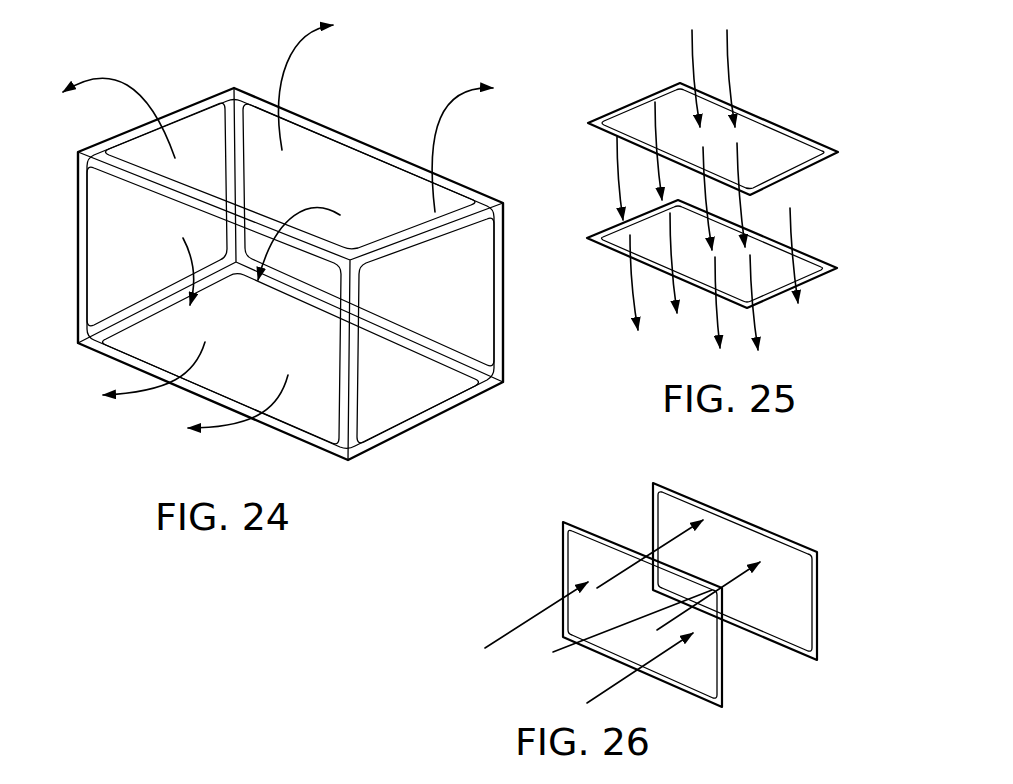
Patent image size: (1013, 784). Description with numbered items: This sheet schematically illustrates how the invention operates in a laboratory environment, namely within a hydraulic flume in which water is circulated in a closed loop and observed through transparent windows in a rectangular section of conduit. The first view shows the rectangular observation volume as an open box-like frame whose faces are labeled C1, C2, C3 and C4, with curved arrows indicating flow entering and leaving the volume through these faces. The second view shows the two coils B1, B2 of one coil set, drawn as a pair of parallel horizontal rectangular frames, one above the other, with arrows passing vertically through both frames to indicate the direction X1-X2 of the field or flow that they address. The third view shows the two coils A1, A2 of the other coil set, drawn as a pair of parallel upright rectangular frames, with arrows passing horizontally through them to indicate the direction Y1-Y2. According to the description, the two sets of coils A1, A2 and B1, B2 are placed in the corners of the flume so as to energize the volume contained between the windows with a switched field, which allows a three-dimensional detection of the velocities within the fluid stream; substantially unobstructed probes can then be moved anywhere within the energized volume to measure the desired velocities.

In FIG. 24, the first side surface of frame C1 is at (354, 142).
In FIG. 24, the second side surface of frame C2 is at (402, 427).
In FIG. 24, the third side surface of frame C3 is at (80, 222).
In FIG. 24, the fourth side surface of frame C4 is at (503, 268).
In FIG. 25, the coil B1 is at (732, 139).
In FIG. 25, the coil B2 is at (731, 254).
In FIG. 25, the vertical flow direction X1-X2 is at (730, 190).
In FIG. 26, the coil A1 is at (628, 598).
In FIG. 26, the coil A2 is at (719, 559).
In FIG. 26, the horizontal flow direction Y1-Y2 is at (661, 591).